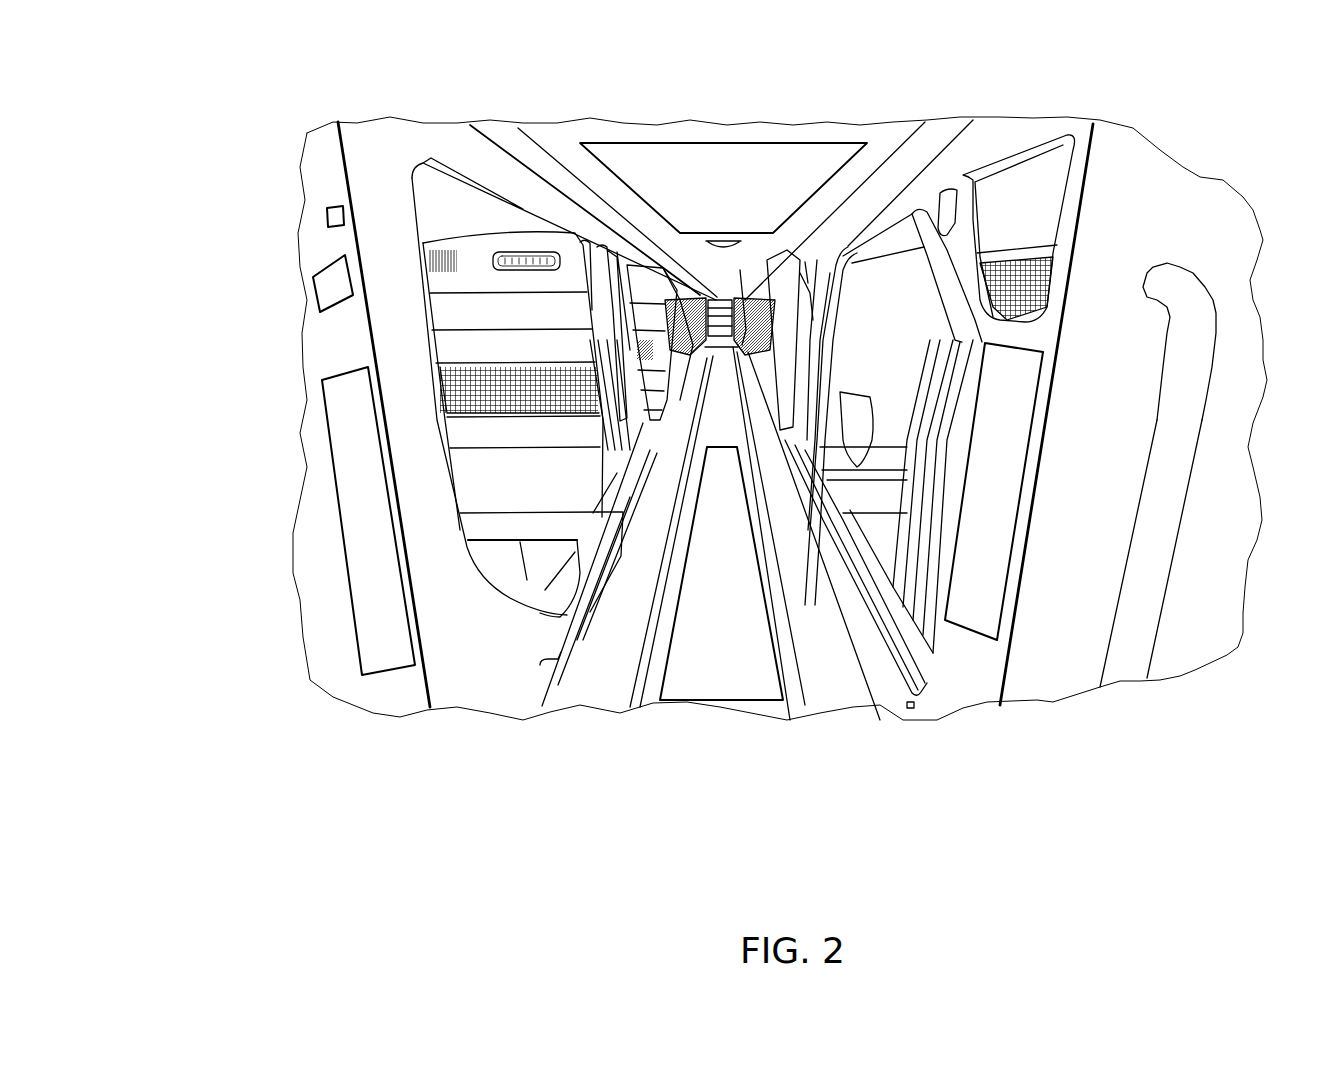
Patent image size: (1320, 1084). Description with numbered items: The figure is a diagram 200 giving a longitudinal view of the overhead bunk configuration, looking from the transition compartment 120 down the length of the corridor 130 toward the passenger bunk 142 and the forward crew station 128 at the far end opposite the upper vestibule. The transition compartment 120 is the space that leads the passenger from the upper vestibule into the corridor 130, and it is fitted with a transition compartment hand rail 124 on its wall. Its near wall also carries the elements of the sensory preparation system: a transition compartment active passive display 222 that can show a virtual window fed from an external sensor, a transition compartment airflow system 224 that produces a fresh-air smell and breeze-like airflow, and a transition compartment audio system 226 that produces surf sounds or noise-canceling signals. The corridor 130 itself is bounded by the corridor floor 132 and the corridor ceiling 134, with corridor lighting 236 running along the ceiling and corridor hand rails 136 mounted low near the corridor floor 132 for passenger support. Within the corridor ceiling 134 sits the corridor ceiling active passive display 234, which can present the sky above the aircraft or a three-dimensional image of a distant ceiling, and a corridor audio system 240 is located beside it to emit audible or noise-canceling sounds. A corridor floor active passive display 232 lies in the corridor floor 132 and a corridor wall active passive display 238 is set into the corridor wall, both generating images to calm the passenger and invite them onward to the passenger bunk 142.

The longitudinal view of overhead bunk configuration 200 is at (164, 150).
The transition compartment 120 is at (1124, 163).
The transition compartment hand rail 124 is at (1178, 282).
The forward crew station 128 is at (716, 298).
The corridor 130 is at (985, 138).
The corridor floor 132 is at (653, 710).
The corridor ceiling 134 is at (881, 140).
The corridor hand rail 136 is at (557, 657).
The passenger bunk 142 is at (512, 562).
The transition compartment active passive display 222 is at (380, 641).
The transition compartment airflow system 224 is at (320, 289).
The transition compartment audio system 226 is at (327, 214).
The corridor floor active passive display 232 is at (713, 667).
The corridor ceiling active passive display 234 is at (769, 167).
The corridor lighting 236 is at (511, 138).
The corridor wall active passive display 238 is at (980, 613).
The corridor audio system 240 is at (722, 240).